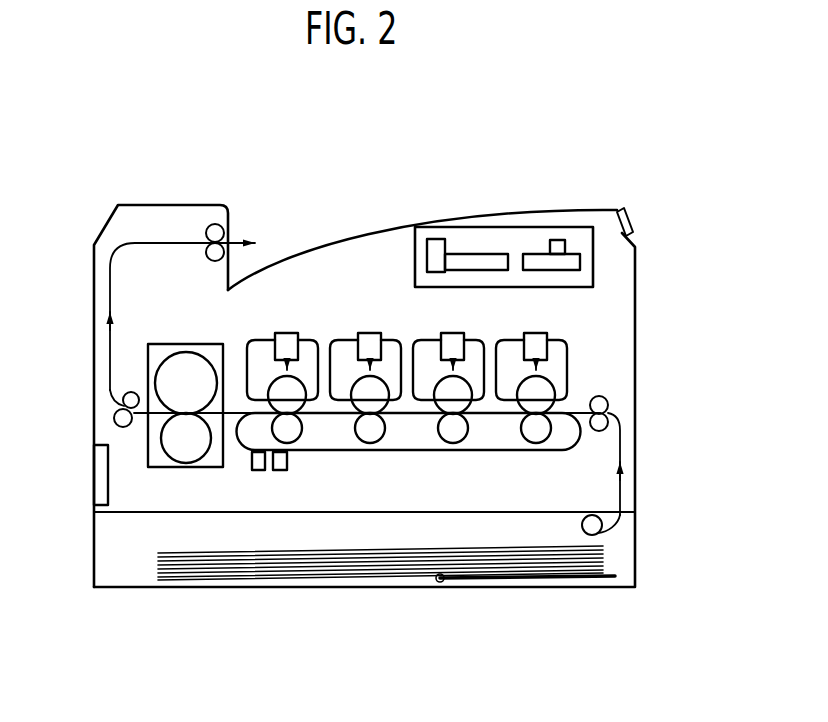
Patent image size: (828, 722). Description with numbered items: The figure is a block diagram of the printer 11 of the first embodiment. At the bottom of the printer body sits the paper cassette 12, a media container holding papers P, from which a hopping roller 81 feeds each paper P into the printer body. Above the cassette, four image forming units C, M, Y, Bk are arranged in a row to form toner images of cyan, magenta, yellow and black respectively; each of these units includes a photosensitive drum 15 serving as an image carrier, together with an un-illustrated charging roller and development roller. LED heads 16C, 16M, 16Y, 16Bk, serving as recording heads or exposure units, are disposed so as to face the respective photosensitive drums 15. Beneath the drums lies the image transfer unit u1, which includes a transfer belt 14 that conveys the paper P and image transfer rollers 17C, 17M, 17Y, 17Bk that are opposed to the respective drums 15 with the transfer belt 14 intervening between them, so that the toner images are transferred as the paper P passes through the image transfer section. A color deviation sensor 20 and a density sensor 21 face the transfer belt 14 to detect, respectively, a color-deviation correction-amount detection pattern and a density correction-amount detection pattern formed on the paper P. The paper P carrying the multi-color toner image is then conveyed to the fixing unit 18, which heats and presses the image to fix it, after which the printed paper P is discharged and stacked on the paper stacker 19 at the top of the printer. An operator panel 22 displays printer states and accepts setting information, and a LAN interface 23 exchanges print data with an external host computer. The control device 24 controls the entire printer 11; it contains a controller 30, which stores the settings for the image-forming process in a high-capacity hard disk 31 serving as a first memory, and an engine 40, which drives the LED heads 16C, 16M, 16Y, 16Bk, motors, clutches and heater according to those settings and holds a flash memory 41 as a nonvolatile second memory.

The printer 11 is at (194, 183).
The paper cassette 12 is at (635, 563).
The transfer belt 14 is at (340, 452).
The photosensitive drum 15 is at (574, 375).
The LED head 16C is at (290, 333).
The LED head 16M is at (372, 333).
The LED head 16Y is at (458, 333).
The LED head 16Bk is at (540, 333).
The image transfer roller 17C is at (290, 443).
The image transfer roller 17M is at (373, 440).
The image transfer roller 17Y is at (458, 443).
The image transfer roller 17Bk is at (540, 443).
The fixing unit 18 is at (150, 388).
The paper stacker 19 is at (298, 262).
The color deviation sensor 20 is at (258, 470).
The density sensor 21 is at (279, 470).
The operator panel 22 is at (632, 214).
The LAN interface 23 is at (100, 472).
The control device 24 is at (600, 268).
The controller 30 is at (477, 250).
The hard disk 31 is at (433, 238).
The engine 40 is at (534, 250).
The flash memory 41 is at (560, 240).
The hopping roller 81 is at (604, 518).
The paper P is at (158, 553).
The image transfer unit u1 is at (511, 463).
The image forming unit C is at (276, 330).
The image forming unit M is at (367, 323).
The image forming unit Y is at (437, 331).
The image forming unit Bk is at (584, 347).